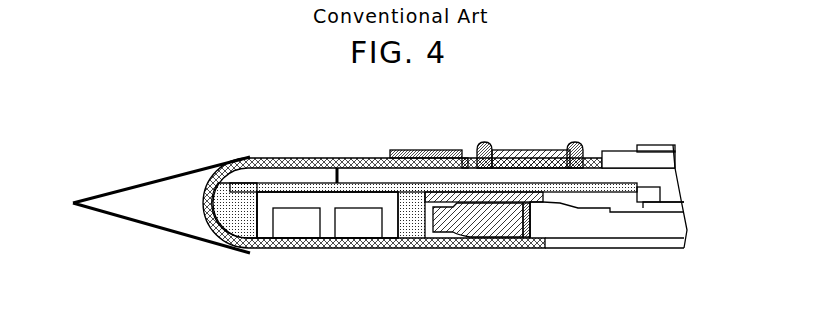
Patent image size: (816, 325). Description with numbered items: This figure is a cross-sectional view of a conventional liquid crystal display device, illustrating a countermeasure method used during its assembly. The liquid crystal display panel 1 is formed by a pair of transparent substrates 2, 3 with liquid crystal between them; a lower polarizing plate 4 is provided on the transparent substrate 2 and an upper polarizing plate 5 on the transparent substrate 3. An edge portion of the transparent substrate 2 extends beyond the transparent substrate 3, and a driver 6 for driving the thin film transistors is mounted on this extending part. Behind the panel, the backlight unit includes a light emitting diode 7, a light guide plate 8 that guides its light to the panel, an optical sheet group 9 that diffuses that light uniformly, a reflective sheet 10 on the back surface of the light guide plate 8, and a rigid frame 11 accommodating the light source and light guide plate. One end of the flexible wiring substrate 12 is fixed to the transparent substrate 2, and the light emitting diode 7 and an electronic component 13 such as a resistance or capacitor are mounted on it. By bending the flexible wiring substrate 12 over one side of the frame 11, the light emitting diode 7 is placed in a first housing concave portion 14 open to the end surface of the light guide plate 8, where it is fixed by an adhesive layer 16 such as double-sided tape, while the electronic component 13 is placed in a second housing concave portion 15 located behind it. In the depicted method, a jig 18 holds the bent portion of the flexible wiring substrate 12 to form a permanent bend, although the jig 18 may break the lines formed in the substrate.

The liquid crystal display panel 1 is at (688, 153).
The transparent substrate 2 is at (590, 175).
The transparent substrate 3 is at (621, 151).
The lower polarizing plate 4 is at (670, 193).
The upper polarizing plate 5 is at (655, 145).
The driver 6 is at (527, 150).
The light emitting diode 7 is at (502, 233).
The light guide plate 8 is at (653, 232).
The optical sheet group 9 is at (683, 205).
The reflective sheet 10 is at (613, 242).
The frame 11 is at (240, 233).
The flexible wiring substrate 12 is at (278, 158).
The electronic component 13 is at (348, 233).
The first housing concave portion 14 is at (443, 236).
The second housing concave portion 15 is at (390, 233).
The adhesive layer 16 is at (448, 197).
The jig 18 is at (188, 168).